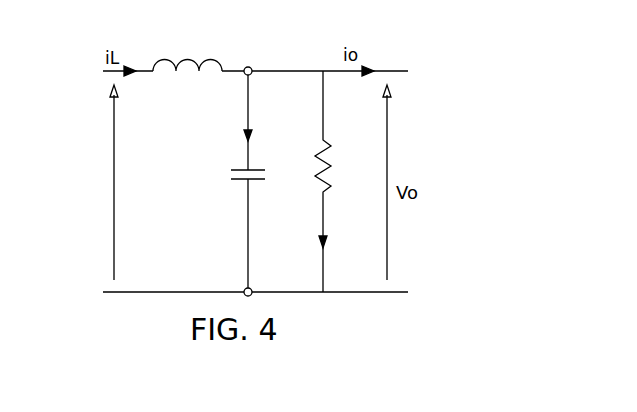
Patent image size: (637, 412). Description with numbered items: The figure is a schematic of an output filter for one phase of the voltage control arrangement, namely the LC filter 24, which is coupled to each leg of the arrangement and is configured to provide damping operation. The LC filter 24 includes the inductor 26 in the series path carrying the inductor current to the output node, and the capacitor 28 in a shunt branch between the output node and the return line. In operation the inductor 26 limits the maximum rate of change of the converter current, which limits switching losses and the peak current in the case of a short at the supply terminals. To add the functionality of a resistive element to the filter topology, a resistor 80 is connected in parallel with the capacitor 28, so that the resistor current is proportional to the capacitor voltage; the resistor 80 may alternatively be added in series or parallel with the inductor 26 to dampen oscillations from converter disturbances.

The LC filter 24 is at (414, 28).
The inductor 26 is at (188, 58).
The capacitor 28 is at (238, 181).
The resistor 80 is at (329, 145).